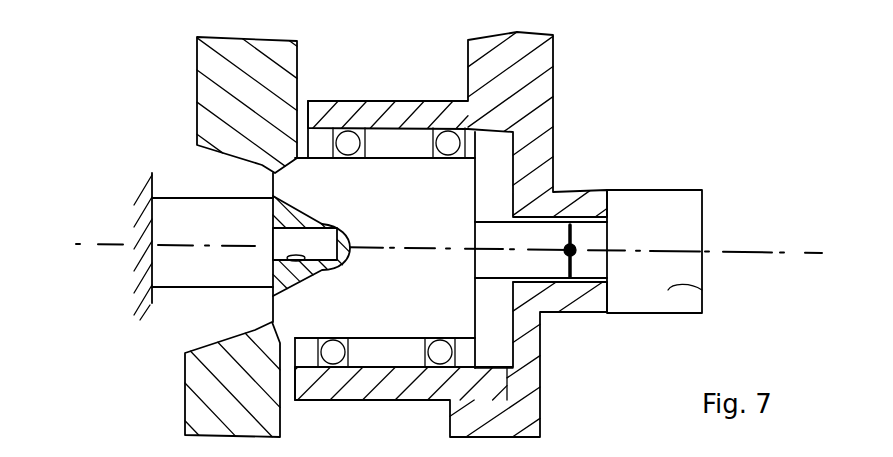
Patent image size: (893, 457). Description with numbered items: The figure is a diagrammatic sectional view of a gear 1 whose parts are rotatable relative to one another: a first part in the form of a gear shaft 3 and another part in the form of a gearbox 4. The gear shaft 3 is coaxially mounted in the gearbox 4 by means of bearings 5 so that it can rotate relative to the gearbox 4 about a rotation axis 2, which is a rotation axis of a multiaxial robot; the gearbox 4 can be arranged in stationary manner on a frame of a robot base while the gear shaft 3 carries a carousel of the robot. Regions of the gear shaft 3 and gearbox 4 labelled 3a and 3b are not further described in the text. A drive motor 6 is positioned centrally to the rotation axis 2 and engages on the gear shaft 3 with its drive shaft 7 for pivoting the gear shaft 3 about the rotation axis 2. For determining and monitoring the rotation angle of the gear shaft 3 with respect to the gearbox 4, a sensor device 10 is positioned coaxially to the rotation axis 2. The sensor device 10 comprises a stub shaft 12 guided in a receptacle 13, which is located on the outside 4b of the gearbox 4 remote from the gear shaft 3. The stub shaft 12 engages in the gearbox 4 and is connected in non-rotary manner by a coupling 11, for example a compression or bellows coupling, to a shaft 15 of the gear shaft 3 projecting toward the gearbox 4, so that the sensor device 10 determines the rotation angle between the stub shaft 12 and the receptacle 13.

The gear 1 is at (620, 93).
The rotation axis 2 is at (770, 253).
The gear shaft 3 is at (196, 88).
The housing part 3a is at (477, 195).
The housing part 3b is at (194, 128).
The gearbox 4 is at (323, 100).
The outside of the gearbox 4b is at (540, 393).
The bearings 5 is at (348, 132).
The drive motor 6 is at (190, 270).
The drive shaft 7 is at (328, 221).
The sensor device 10 is at (655, 186).
The coupling 11 is at (572, 247).
The stub shaft 12 is at (590, 263).
The receptacle 13 is at (702, 290).
The shaft 15 is at (493, 262).